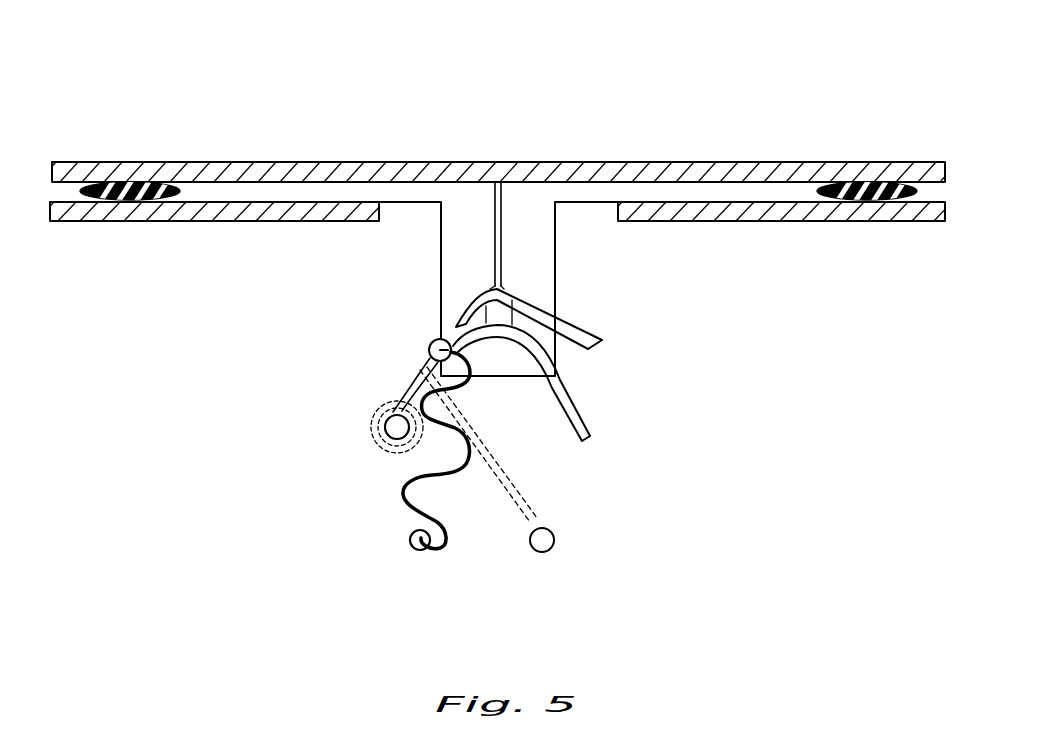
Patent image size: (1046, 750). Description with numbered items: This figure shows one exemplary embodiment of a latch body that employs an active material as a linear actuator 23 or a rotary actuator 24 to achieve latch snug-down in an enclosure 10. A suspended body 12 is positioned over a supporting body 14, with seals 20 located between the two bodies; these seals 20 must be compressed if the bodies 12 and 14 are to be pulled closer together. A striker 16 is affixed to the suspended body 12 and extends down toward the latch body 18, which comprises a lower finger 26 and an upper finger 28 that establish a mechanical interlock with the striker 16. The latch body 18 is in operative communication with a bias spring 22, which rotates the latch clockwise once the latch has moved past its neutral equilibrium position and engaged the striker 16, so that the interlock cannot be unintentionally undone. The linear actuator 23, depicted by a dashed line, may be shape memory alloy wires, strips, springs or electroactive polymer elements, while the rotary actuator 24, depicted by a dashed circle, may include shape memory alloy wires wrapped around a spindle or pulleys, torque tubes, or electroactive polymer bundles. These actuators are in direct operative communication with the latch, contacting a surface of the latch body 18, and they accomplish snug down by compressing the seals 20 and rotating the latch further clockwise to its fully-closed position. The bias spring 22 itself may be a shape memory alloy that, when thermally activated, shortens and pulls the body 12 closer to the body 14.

The enclosure 10 is at (596, 100).
The suspended body 12 is at (256, 162).
The supporting body 14 is at (167, 221).
The striker 16 is at (497, 231).
The latch body 18 is at (393, 366).
The seals 20 is at (817, 190).
The bias spring 22 is at (406, 493).
The linear actuator 23 is at (498, 477).
The rotary actuator 24 is at (376, 448).
The lower finger 26 is at (580, 410).
The upper finger 28 is at (583, 323).